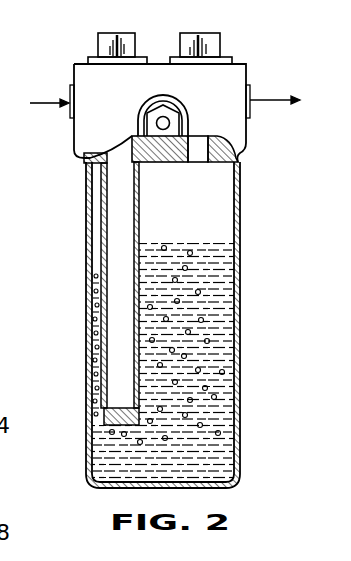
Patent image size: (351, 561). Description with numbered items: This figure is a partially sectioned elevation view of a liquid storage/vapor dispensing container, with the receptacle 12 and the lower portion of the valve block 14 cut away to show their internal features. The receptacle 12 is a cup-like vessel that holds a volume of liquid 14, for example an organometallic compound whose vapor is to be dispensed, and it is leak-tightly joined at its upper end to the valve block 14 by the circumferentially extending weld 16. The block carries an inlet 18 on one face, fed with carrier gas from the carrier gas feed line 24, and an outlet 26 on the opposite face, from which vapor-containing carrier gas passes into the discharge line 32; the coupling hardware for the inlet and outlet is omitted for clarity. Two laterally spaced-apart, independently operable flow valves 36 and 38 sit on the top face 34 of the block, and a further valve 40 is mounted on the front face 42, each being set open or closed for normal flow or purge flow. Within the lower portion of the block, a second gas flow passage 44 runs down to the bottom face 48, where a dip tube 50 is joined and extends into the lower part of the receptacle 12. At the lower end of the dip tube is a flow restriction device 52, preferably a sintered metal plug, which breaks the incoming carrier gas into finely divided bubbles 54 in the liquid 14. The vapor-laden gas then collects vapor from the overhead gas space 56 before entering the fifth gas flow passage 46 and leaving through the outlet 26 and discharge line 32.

The receptacle 12 is at (240, 339).
The valve block 14 is at (233, 133).
The circumferentially extending weld 16 is at (84, 156).
The inlet 18 is at (70, 92).
The carrier gas feed line 24 is at (38, 104).
The outlet 26 is at (250, 92).
The discharge line 32 is at (277, 103).
The top face 34 is at (160, 64).
The flow valve 36 is at (98, 40).
The flow valve 38 is at (221, 36).
The valve 40 is at (140, 112).
The front face 42 is at (150, 90).
The second gas flow passage 44 is at (117, 165).
The fifth gas flow passage 46 is at (203, 150).
The bottom face 48 is at (153, 162).
The dip tube 50 is at (104, 217).
The flow restriction device 52 is at (107, 424).
The bubbles 54 is at (197, 353).
The overhead gas space 56 is at (202, 213).